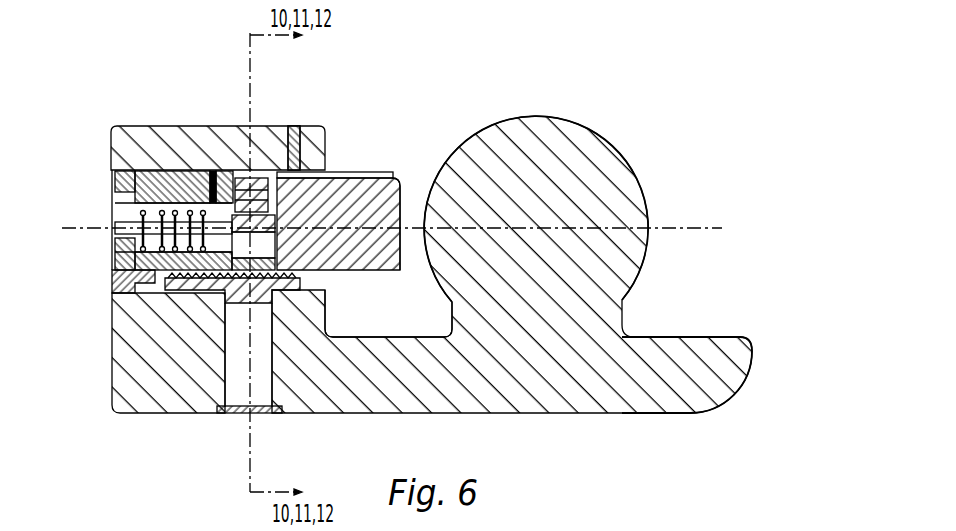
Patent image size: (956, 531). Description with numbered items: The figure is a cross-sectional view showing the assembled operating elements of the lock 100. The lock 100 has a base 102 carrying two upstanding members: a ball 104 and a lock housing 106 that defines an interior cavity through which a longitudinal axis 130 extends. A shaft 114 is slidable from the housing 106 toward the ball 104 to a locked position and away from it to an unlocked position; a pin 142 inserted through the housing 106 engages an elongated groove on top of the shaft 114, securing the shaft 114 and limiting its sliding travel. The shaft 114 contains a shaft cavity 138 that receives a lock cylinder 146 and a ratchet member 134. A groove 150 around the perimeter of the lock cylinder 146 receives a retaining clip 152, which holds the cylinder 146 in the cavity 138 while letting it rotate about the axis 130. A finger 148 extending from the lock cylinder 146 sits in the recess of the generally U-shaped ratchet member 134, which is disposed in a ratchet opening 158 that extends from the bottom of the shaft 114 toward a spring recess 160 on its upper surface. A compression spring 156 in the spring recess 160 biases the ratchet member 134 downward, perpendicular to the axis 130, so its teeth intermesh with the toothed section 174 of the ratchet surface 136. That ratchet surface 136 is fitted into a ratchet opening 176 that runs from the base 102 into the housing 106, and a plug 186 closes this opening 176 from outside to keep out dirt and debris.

The lock 100 is at (728, 196).
The base 102 is at (728, 371).
The ball 104 is at (583, 155).
The lock housing 106 is at (133, 384).
The shaft 114 is at (403, 172).
The longitudinal axis 130 is at (72, 228).
The ratchet member 134 is at (140, 172).
The ratchet surface 136 is at (228, 300).
The shaft cavity 138 is at (328, 307).
The pin 142 is at (293, 127).
The lock cylinder 146 is at (112, 195).
The finger 148 is at (292, 292).
The groove 150 is at (232, 186).
The retaining clip 152 is at (197, 182).
The compression spring 156 is at (322, 127).
The ratchet opening 158 is at (258, 238).
The spring recess 160 is at (377, 200).
The toothed section 174 is at (123, 312).
The ratchet opening 176 is at (238, 375).
The plug 186 is at (262, 413).